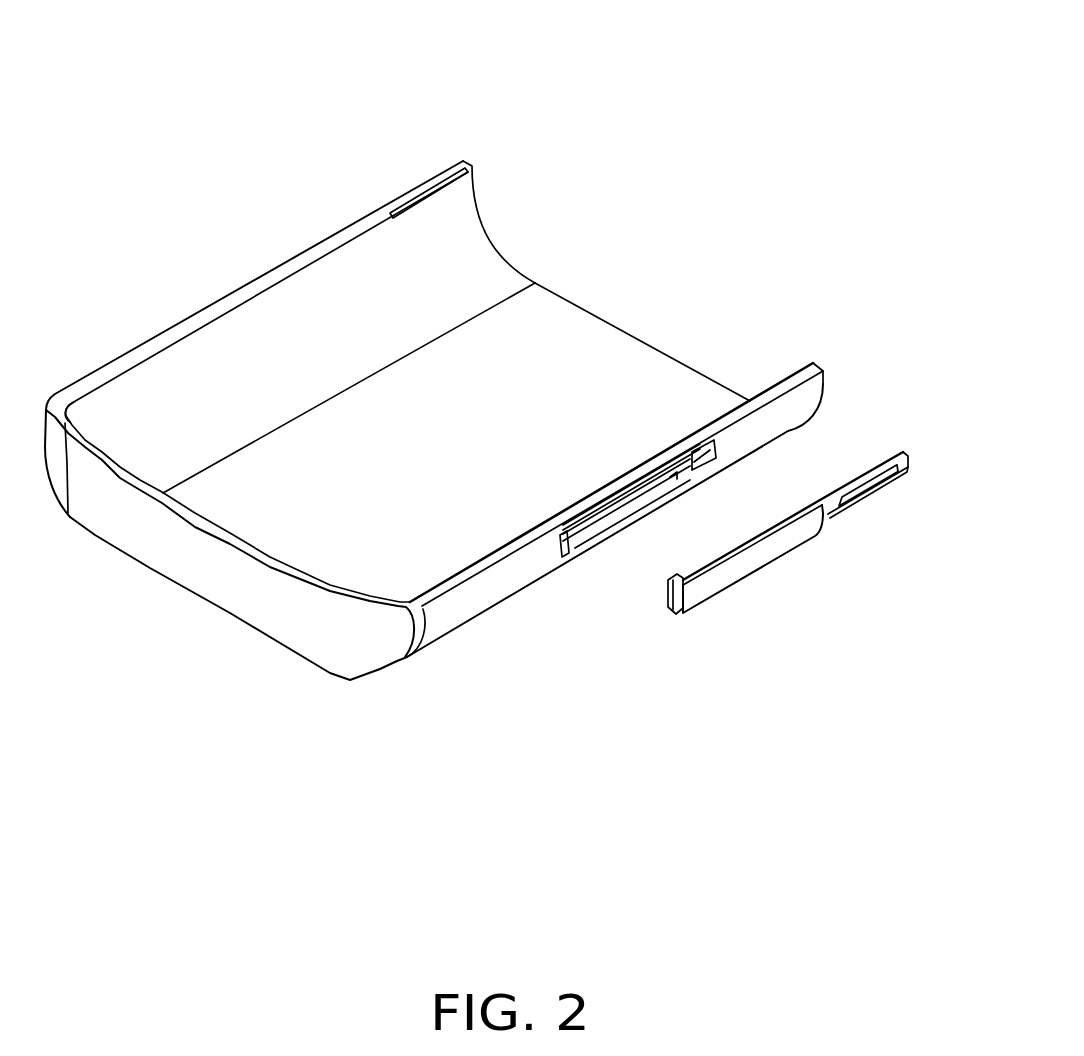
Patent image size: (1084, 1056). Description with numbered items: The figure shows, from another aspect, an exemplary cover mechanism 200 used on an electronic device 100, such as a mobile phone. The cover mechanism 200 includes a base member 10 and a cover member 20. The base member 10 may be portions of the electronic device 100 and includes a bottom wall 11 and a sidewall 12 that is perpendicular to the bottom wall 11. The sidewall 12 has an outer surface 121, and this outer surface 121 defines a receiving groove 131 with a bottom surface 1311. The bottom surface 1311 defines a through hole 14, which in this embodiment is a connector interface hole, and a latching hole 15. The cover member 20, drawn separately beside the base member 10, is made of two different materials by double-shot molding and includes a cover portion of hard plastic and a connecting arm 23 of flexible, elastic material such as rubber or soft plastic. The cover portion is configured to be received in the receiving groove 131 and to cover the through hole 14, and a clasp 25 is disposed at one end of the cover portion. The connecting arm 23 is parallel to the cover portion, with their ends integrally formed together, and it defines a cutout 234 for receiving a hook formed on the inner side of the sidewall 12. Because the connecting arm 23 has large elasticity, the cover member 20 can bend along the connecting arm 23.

The electronic device 100 is at (360, 82).
The cover mechanism 200 is at (843, 219).
The base member 10 is at (800, 266).
The bottom wall 11 is at (635, 380).
The sidewall 12 is at (780, 390).
The outer surface 121 is at (462, 607).
The receiving groove 131 is at (618, 518).
The bottom surface 1311 is at (568, 550).
The through hole 14 is at (590, 522).
The latching hole 15 is at (700, 468).
The cover member 20 is at (873, 408).
The connecting arm 23 is at (908, 458).
The cutout 234 is at (867, 493).
The clasp 25 is at (668, 590).